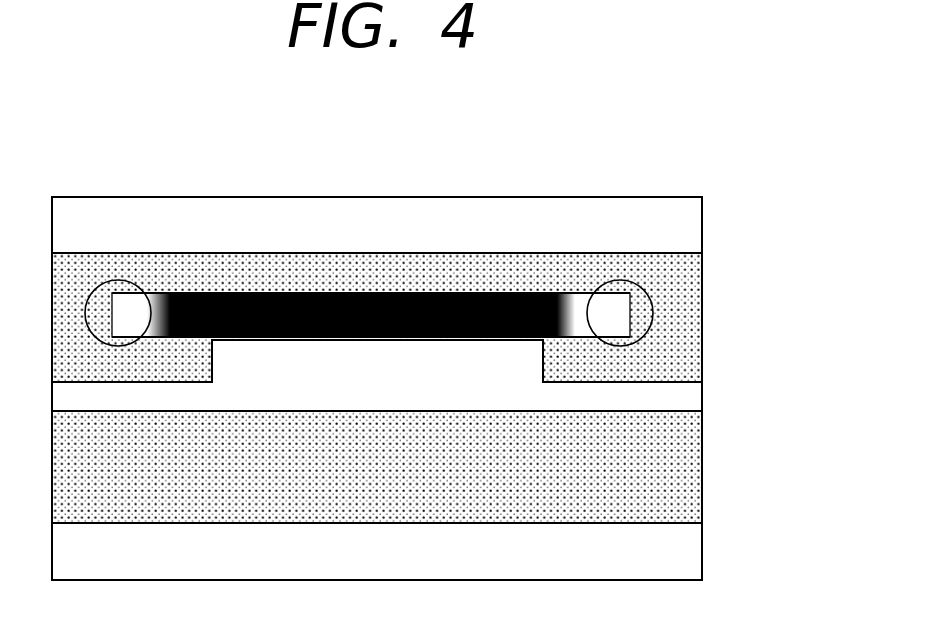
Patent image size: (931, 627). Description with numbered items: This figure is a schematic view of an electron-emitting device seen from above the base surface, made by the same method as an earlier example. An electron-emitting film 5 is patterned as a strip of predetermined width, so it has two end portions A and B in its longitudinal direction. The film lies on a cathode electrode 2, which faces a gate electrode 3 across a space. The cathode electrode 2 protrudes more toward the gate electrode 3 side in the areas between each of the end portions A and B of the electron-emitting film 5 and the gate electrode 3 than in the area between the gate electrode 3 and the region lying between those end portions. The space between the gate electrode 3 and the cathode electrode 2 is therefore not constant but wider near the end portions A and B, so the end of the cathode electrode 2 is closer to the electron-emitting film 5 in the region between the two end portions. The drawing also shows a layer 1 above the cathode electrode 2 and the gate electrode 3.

The first layer (upper substrate) 1 is at (693, 222).
The cathode electrode 2 is at (690, 288).
The gate electrode 3 is at (685, 457).
The electron-emitting film 5 is at (300, 291).
The end portion A is at (118, 278).
The end portion B is at (617, 280).